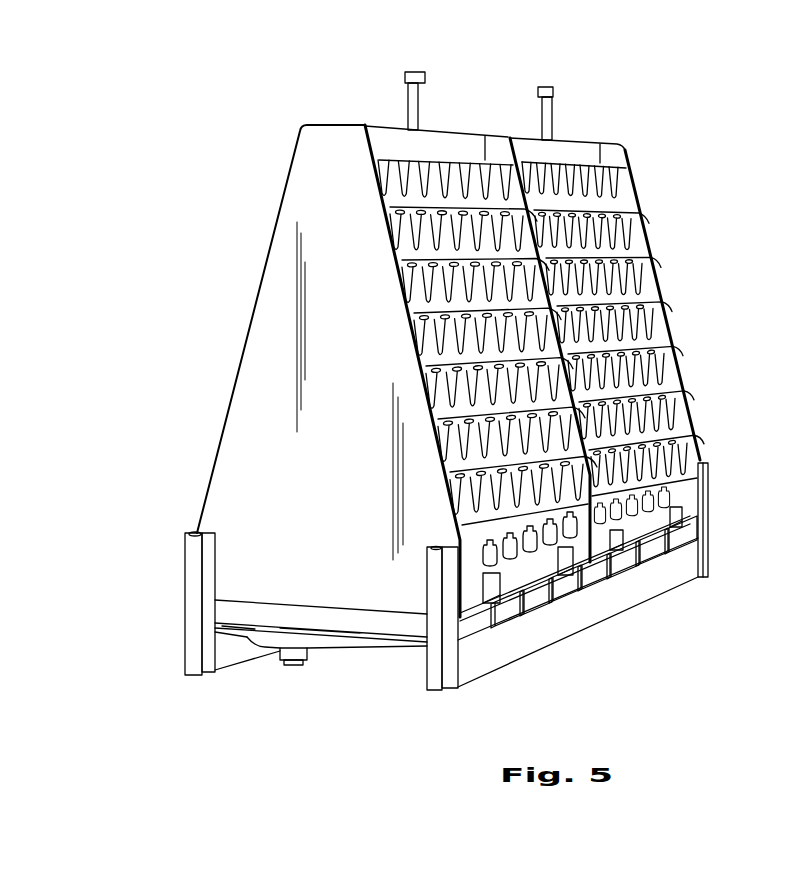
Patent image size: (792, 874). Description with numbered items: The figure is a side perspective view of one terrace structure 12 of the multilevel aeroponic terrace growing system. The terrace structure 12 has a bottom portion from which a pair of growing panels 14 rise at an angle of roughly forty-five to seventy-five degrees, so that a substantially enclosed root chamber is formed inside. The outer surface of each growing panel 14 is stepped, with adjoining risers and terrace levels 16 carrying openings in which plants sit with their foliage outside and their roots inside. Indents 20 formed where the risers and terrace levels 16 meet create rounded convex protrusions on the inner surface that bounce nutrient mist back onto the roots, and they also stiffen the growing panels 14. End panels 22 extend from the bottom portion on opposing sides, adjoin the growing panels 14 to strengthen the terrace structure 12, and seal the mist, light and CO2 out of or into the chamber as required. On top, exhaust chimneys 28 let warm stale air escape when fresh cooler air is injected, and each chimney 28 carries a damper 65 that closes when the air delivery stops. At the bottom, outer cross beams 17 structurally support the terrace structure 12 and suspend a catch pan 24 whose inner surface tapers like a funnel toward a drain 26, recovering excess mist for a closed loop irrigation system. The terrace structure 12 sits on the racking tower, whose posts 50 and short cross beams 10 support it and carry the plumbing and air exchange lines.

The short cross beam 10 is at (407, 625).
The terrace structure 12 is at (203, 228).
The growing panel 14 is at (417, 248).
The terrace level 16 is at (650, 300).
The outer cross beam 17 is at (657, 580).
The indent 20 is at (620, 228).
The end panel 22 is at (275, 345).
The catch pan 24 is at (345, 647).
The drain 26 is at (293, 667).
The exhaust chimney 28 is at (408, 95).
The post 50 is at (188, 595).
The damper 65 is at (415, 72).